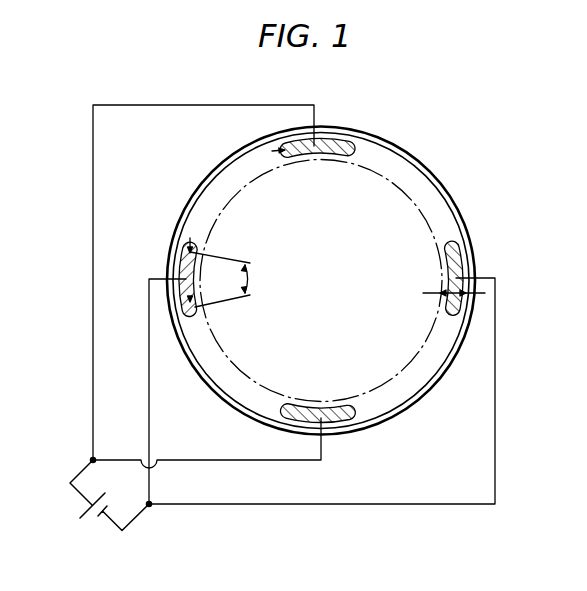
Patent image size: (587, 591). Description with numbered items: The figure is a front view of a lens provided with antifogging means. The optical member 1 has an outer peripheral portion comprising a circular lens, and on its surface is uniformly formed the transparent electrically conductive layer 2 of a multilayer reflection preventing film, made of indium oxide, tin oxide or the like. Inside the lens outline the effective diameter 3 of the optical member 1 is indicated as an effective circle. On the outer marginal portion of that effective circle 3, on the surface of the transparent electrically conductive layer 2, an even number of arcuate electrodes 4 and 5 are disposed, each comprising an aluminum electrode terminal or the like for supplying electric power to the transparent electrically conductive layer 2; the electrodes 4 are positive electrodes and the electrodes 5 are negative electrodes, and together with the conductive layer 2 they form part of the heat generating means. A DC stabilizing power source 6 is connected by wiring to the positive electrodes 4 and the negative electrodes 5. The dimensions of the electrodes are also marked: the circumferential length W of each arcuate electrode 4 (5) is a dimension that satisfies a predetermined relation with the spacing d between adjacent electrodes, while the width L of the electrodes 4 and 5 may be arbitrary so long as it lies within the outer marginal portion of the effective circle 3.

The optical member 1 is at (321, 281).
The transparent electrically conductive layer 2 is at (326, 281).
The effective diameter 3 is at (347, 281).
The electrodes 4 is at (319, 283).
The electrodes 5 is at (330, 268).
The DC stabilizing power source 6 is at (95, 495).
The spacing between adjacent electrodes d is at (202, 165).
The circumferential length of each arcuate electrode W is at (227, 272).
The width of the electrodes L is at (438, 309).